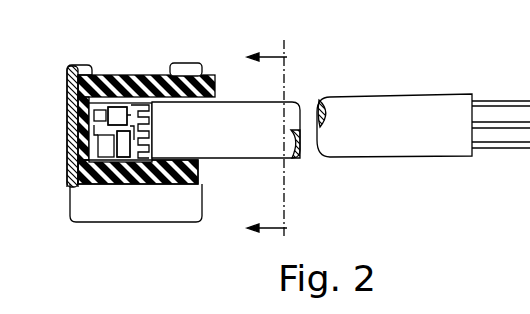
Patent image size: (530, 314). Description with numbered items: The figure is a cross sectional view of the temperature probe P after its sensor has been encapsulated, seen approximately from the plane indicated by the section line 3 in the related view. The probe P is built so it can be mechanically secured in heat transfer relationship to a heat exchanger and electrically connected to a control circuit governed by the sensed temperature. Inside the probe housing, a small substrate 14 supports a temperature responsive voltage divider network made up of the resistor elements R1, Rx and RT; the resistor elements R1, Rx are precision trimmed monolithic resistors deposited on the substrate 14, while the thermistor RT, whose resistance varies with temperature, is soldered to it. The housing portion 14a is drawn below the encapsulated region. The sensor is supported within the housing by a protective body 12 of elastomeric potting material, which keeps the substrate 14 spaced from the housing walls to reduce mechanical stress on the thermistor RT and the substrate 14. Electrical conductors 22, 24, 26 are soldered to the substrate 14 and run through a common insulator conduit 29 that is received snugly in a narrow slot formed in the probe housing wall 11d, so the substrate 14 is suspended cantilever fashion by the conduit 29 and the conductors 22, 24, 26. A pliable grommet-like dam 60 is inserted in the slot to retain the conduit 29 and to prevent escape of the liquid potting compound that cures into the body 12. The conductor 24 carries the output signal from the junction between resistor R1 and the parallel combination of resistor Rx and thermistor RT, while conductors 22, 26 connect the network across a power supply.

The temperature probe P is at (90, 46).
The substrate 14 is at (100, 110).
The protective body 12 is at (155, 75).
The thermistor RT is at (100, 146).
The resistor element R1 is at (118, 118).
The resistor element Rx is at (121, 176).
The grommet-like dam 60 is at (212, 93).
The probe housing wall 11d is at (200, 174).
The housing base 14a is at (155, 210).
The section line 3- 3 is at (274, 139).
The insulator conduit 29 is at (350, 145).
The electrical conductor 22 is at (488, 102).
The electrical conductor 24 is at (494, 130).
The electrical conductor 26 is at (508, 150).